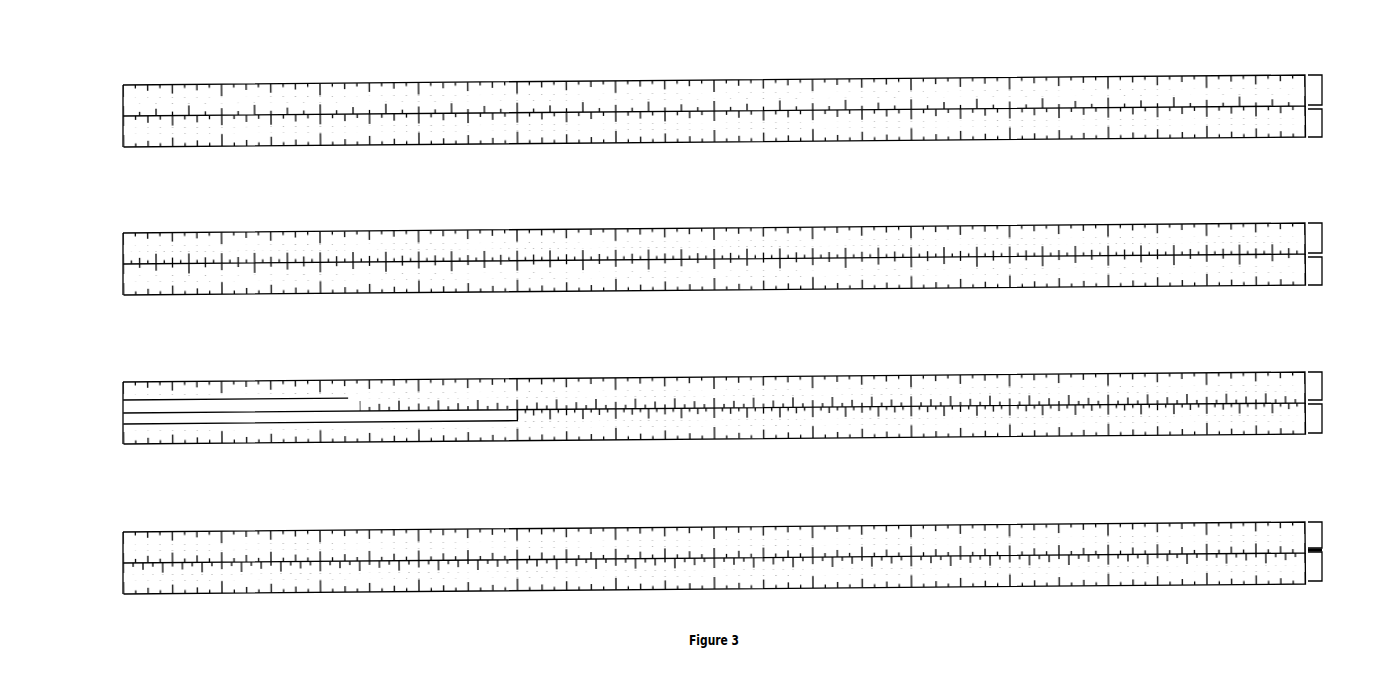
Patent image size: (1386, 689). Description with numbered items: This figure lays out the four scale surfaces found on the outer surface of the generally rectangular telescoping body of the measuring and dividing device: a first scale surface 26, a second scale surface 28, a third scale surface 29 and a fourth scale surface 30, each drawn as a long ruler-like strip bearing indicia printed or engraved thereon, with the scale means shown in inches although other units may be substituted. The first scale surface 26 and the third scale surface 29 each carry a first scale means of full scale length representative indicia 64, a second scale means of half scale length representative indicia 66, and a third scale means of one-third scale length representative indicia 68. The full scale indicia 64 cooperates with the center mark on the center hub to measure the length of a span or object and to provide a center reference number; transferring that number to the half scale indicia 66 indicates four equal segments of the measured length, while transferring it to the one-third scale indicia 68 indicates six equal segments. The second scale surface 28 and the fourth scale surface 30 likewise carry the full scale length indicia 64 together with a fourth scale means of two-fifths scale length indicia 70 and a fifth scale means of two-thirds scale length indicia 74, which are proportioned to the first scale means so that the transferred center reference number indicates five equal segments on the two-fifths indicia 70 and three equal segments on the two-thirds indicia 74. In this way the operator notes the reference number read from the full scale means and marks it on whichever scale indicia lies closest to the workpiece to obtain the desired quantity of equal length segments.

The first scale surface 26 is at (1322, 122).
The second scale surface 28 is at (1322, 268).
The third scale surface 29 is at (1322, 418).
The fourth scale surface 30 is at (1322, 90).
The full scale length representative indicia 64 is at (123, 97).
The half scale length representative indicia 66 is at (679, 335).
The one-third scale length representative indicia 68 is at (679, 334).
The two fifths scale length indicia 70 is at (679, 483).
The two-third scale length indicia 74 is at (679, 185).